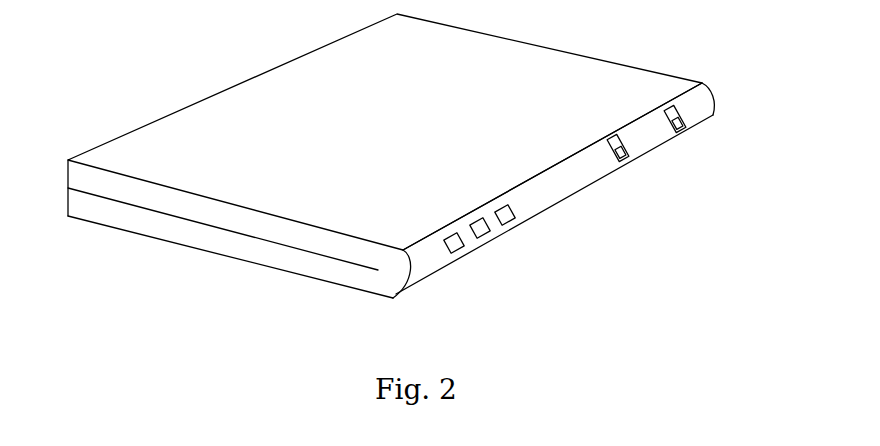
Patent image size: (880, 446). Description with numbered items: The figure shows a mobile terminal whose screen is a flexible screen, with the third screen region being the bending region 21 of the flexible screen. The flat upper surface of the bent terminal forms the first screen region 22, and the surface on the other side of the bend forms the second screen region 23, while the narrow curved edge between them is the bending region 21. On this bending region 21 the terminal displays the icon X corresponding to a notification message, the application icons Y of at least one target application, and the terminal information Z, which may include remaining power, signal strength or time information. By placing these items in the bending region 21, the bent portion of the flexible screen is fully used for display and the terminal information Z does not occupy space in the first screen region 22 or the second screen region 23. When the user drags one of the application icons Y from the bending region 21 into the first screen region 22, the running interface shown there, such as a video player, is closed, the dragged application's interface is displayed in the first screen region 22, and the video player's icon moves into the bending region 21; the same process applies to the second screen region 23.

The bending region 21 is at (538, 198).
The first screen region 22 is at (195, 128).
The second screen region 23 is at (195, 235).
The icon corresponding to the notification message X is at (680, 127).
The application icons Y is at (508, 217).
The terminal information Z is at (620, 157).